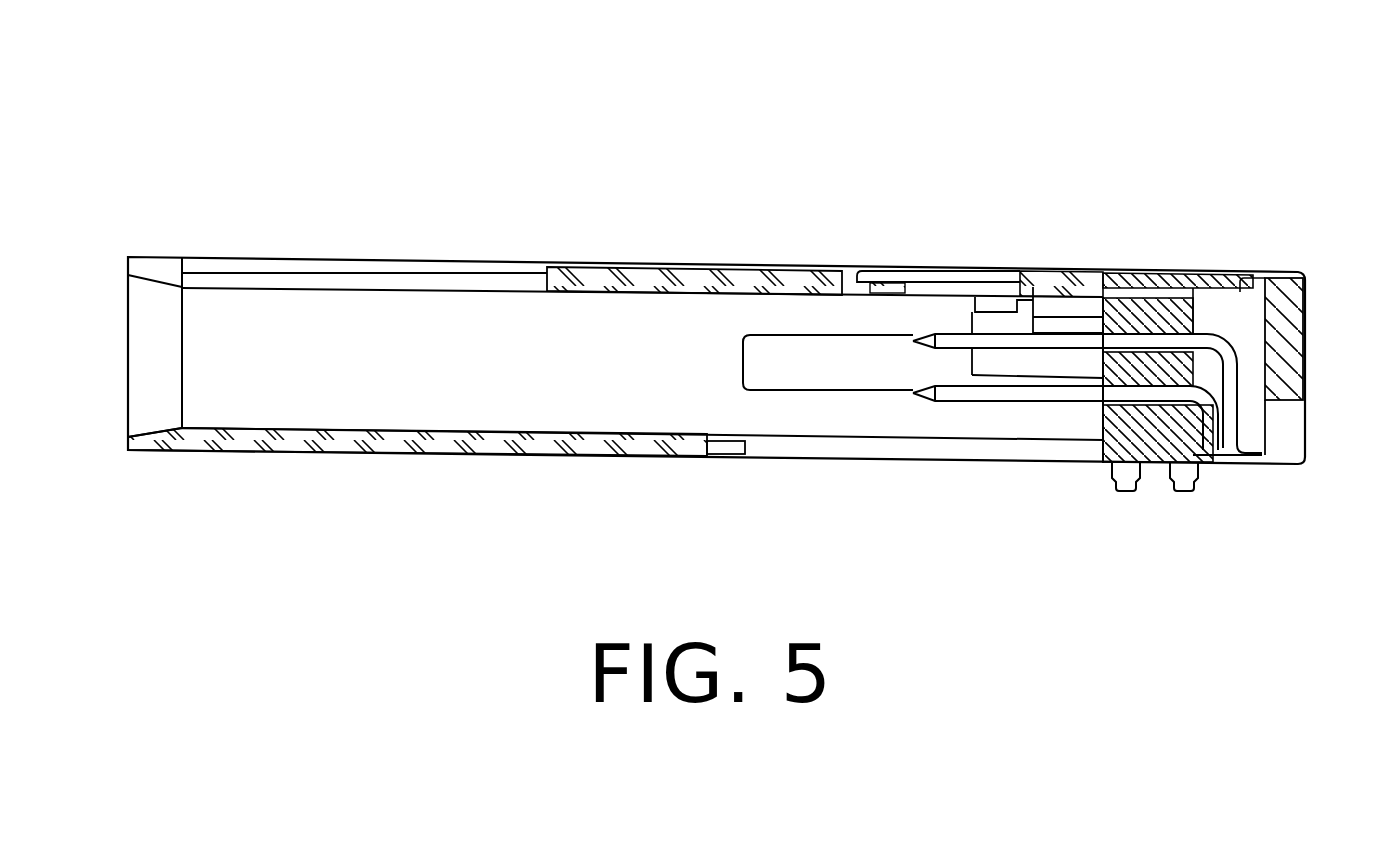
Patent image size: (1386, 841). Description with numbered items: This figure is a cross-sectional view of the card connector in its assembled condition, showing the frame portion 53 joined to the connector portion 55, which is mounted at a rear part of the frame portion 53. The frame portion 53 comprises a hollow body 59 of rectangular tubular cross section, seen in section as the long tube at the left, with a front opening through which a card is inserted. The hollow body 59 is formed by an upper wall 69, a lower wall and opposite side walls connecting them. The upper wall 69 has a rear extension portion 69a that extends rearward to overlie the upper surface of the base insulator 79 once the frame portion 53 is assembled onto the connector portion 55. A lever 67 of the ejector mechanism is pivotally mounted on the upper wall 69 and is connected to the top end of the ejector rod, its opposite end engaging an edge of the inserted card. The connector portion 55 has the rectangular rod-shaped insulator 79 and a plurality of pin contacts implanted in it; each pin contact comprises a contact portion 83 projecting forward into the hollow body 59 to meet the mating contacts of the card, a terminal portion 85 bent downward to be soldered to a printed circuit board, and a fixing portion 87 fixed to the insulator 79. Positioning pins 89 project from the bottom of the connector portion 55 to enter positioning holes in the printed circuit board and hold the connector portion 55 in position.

The frame portion 53 is at (766, 213).
The connector portion 55 is at (1160, 470).
The hollow body 59 is at (1213, 273).
The lever 67 is at (967, 273).
The upper wall 69 is at (682, 262).
The rear extension portion 69a is at (1077, 272).
The insulator 79 is at (1212, 468).
The contact portion 83 is at (932, 332).
The terminal portion 85 is at (1260, 468).
The fixing portion 87 is at (1275, 278).
The positioning pins 89 is at (1107, 468).